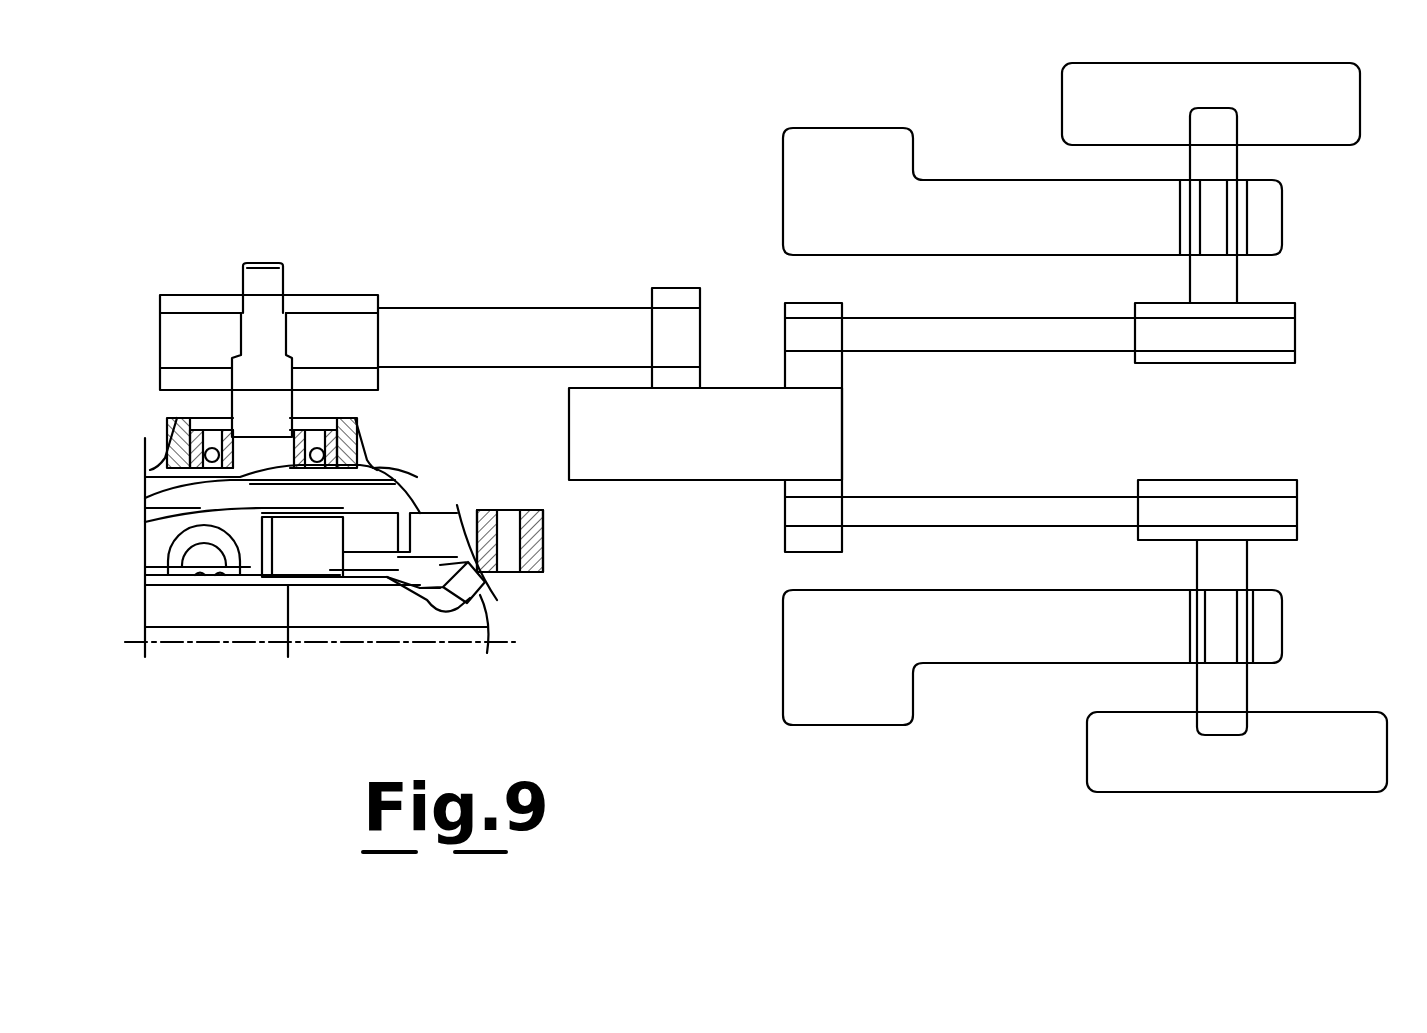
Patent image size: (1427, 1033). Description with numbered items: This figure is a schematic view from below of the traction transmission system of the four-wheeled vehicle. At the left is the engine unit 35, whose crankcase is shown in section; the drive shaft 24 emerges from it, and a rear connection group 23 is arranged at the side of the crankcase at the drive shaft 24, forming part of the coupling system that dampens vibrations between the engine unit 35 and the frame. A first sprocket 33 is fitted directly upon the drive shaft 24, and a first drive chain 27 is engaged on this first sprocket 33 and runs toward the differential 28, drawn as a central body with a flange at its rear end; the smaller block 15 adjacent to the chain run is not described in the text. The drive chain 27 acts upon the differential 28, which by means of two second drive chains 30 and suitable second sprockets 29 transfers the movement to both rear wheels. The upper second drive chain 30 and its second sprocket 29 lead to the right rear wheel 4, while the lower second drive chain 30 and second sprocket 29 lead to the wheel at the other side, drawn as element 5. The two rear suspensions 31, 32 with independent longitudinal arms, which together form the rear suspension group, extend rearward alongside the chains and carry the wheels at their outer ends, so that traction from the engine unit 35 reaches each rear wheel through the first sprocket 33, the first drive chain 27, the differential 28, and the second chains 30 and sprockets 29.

The right rear wheel 4 is at (1337, 93).
The lower brake pad 5 is at (1360, 737).
The adjusting block 15 is at (662, 254).
The rear connection group 23 is at (300, 276).
The drive shaft 24 is at (261, 262).
The first drive chain 27 is at (518, 338).
The differential 28 is at (706, 460).
The second sprocket 29 is at (1282, 358).
The second drive chain 30 is at (1058, 341).
The suspension with independent longitudinal arm 31 is at (868, 710).
The suspension with independent longitudinal arm 32 is at (848, 146).
The first sprocket 33 is at (332, 305).
The engine unit 35 is at (244, 637).